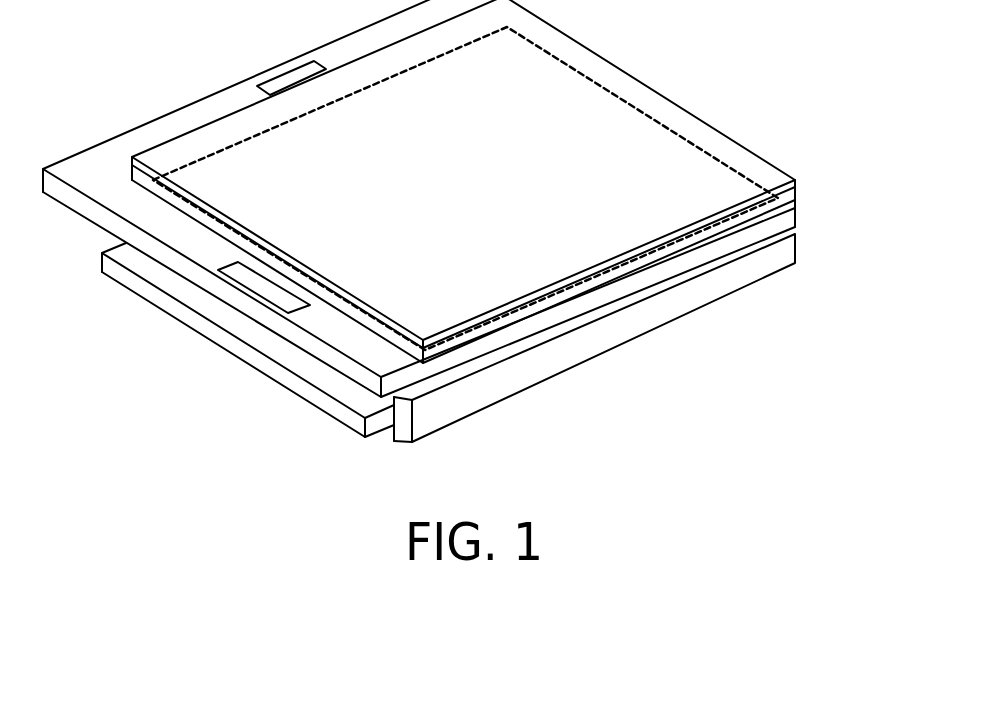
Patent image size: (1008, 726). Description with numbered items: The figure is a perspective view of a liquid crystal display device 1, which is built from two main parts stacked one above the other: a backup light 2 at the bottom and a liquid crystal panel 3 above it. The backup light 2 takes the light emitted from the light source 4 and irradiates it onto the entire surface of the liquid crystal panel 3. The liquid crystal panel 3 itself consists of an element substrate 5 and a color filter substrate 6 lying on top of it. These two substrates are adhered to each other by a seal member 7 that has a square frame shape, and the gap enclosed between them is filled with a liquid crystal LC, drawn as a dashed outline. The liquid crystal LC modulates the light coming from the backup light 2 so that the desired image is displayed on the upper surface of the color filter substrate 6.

The liquid crystal display device 1 is at (130, 90).
The backup light 2 is at (462, 408).
The liquid crystal panel 3 is at (853, 178).
The light source 4 is at (378, 428).
The element substrate 5 is at (797, 213).
The color filter substrate 6 is at (797, 190).
The seal member 7 is at (671, 120).
The liquid crystal LC is at (629, 100).